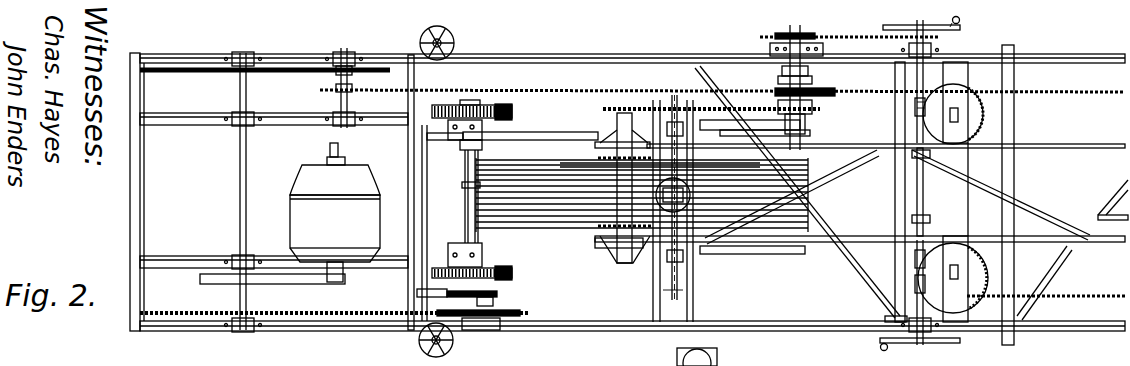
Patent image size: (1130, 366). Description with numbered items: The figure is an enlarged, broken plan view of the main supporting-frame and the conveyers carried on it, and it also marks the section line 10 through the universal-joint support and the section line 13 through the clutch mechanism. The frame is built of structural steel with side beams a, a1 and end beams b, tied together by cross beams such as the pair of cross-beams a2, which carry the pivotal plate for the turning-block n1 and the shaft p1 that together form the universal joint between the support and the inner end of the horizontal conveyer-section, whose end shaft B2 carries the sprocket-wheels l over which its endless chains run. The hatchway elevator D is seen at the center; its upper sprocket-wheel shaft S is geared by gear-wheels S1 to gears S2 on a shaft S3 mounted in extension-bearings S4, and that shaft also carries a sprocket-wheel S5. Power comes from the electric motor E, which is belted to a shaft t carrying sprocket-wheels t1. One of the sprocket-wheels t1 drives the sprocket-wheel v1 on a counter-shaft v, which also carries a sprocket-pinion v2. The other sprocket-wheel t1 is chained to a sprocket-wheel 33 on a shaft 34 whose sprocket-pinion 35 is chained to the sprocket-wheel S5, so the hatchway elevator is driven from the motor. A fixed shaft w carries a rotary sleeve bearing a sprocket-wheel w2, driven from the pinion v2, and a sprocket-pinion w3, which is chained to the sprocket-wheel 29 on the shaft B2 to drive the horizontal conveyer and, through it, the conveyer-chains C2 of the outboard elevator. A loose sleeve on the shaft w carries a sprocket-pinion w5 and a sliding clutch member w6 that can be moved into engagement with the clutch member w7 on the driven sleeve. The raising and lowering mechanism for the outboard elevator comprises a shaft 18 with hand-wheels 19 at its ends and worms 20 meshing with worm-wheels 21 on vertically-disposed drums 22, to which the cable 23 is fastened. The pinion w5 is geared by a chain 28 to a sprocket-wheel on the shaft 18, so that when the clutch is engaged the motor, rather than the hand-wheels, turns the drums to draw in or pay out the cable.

The end beam b is at (131, 185).
The shaft t is at (240, 190).
The sprocket-wheels t1 is at (238, 90).
The counter-shaft v is at (340, 104).
The sprocket-wheel v1 is at (349, 66).
The sprocket-pinion v2 is at (336, 90).
The conveyer-chains C2 is at (454, 42).
The upper sprocket-wheel shaft S is at (465, 215).
The gear-wheels S1 is at (505, 106).
The gears S2 is at (456, 106).
The shaft S3 is at (462, 186).
The extension-bearings S4 is at (458, 143).
The sprocket-wheel S5 is at (430, 292).
The sprocket-wheel 33 is at (522, 313).
The shaft 34 is at (494, 301).
The sprocket-pinion 35 is at (486, 292).
The shaft B2 is at (598, 155).
The sprocket-wheels l is at (640, 158).
The hatchway conveyer-section or elevator D is at (642, 195).
The sprocket-wheel 29 is at (616, 110).
The side beam a is at (616, 331).
The side beam a1 is at (617, 62).
The cross-beams a2 is at (653, 295).
The shaft 10 is at (676, 209).
The shaft p1 is at (688, 252).
The turning-block n1 is at (688, 185).
The fixed shaft w is at (801, 36).
The sprocket-wheel w2 is at (812, 98).
The sprocket-pinion w3 is at (792, 197).
The sprocket-pinion w5 is at (783, 38).
The sliding clutch member w6 is at (810, 74).
The clutch member w7 is at (778, 80).
The bearing 13 is at (810, 22).
The chain 28 is at (904, 24).
The hand-wheels 19 is at (958, 26).
The worms 20 is at (918, 110).
The worm-wheels 21 is at (975, 115).
The drums 22 is at (986, 120).
The cable 23 is at (1103, 163).
The shaft 18 is at (924, 200).
The electric motor E is at (335, 212).